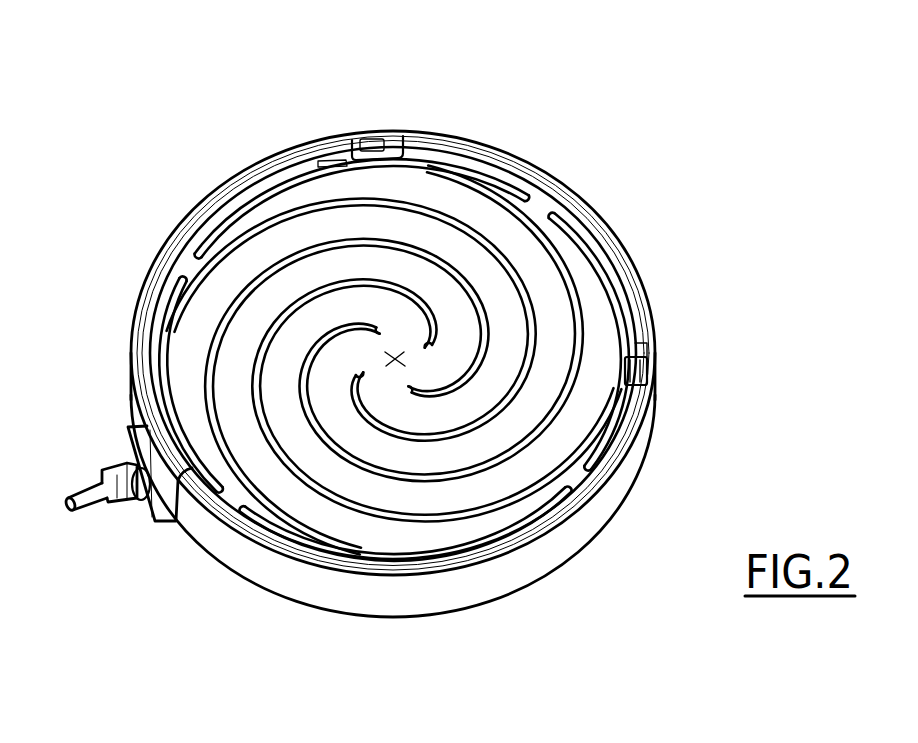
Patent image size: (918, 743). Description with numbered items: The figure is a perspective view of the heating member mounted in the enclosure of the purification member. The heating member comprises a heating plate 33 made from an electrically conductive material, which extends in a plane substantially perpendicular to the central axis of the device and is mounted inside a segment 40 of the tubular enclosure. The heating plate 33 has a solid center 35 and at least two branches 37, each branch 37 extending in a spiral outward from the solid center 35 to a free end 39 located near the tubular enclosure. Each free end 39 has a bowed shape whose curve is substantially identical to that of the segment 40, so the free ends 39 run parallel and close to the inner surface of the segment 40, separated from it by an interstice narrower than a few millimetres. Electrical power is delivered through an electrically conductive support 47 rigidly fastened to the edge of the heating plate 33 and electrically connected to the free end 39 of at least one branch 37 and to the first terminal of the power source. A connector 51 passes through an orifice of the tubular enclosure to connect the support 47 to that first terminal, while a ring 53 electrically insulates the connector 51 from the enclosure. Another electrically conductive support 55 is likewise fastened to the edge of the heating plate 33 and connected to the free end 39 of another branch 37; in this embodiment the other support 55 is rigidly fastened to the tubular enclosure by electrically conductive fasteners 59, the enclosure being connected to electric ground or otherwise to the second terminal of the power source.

The heating plate 33 is at (292, 242).
The solid center 35 is at (396, 356).
The branches 37 is at (185, 332).
The free end 39 is at (533, 215).
The segment 40 is at (455, 585).
The electrically conductive support 47 is at (385, 560).
The connector 51 is at (97, 484).
The ring 53 is at (140, 488).
The other electrically conductive support 55 is at (487, 165).
The electrically conductive fasteners 59 is at (370, 140).